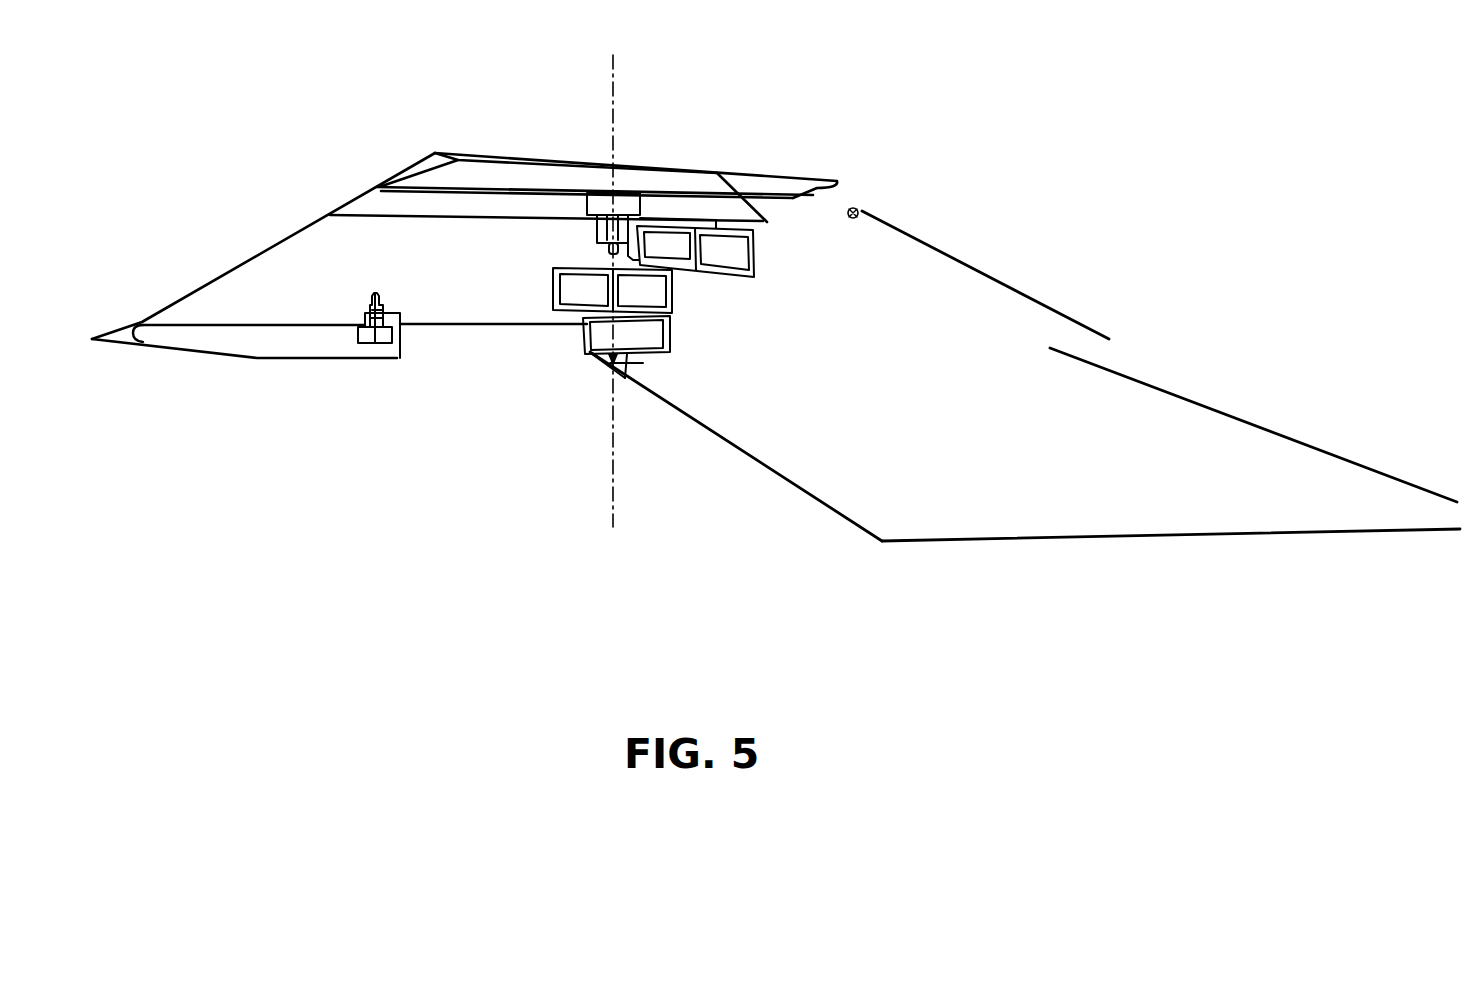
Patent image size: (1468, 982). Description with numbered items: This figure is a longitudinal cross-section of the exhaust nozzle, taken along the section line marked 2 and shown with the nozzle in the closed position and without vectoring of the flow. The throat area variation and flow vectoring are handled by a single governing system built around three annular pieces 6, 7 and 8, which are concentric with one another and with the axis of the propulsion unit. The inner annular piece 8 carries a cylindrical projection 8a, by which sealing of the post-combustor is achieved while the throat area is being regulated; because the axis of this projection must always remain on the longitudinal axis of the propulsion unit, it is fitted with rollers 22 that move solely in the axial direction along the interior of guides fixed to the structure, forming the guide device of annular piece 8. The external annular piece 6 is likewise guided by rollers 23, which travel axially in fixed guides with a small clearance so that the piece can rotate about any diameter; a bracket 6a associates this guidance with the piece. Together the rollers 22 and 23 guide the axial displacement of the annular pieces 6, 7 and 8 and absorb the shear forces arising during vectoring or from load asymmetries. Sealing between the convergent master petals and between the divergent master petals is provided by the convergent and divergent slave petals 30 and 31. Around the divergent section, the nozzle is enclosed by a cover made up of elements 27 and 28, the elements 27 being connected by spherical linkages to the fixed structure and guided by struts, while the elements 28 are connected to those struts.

The convergent section 2 is at (613, 78).
The external annular piece 6 is at (757, 250).
The module mounting bracket 6a is at (712, 222).
The annular piece 7 is at (673, 297).
The annular piece 8 is at (672, 338).
The cylindrical projection 8a is at (477, 327).
The rollers 22 is at (370, 343).
The rollers 23 is at (622, 203).
The cover element 27 is at (957, 252).
The cover element 28 is at (1252, 420).
The convergent slave petals 30 is at (810, 503).
The divergent slave petals 31 is at (1093, 538).